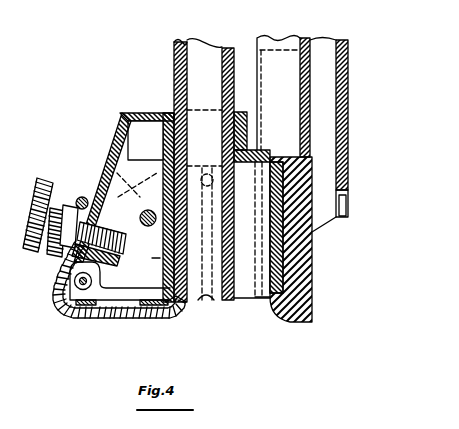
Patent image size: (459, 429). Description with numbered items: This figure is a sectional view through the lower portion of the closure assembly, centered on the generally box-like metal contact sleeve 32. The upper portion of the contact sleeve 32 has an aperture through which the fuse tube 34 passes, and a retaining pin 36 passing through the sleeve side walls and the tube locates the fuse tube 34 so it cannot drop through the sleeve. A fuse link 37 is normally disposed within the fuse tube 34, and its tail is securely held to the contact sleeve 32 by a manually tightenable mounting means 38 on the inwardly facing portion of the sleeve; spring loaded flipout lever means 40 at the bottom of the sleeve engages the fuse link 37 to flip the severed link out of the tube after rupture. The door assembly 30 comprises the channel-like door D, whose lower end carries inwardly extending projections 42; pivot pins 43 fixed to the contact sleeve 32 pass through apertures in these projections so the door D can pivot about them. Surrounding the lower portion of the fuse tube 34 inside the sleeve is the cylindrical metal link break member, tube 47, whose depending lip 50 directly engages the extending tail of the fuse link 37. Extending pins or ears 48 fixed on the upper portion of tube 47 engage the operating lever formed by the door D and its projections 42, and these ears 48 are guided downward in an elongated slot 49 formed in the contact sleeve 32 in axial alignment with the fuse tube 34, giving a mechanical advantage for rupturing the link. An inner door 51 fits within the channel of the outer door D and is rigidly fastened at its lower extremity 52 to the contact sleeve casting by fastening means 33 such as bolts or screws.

The door assembly 30 is at (354, 118).
The contact sleeve 32 is at (152, 148).
The fastening means 33 is at (285, 268).
The fuse tube 34 is at (174, 52).
The retaining pin 36 is at (175, 118).
The fuse link 37 is at (142, 316).
The manually tightenable mounting means 38 is at (32, 236).
The spring loaded flipout lever means 40 is at (94, 314).
The inwardly extending projections 42 is at (103, 166).
The pivot pins 43 is at (146, 228).
The cylindrical tube (link break member) 47 is at (238, 298).
The extending pins or ears 48 is at (205, 128).
The elongated slot 49 is at (212, 265).
The depending lip 50 is at (176, 306).
The inner door 51 is at (300, 90).
The lower extremity of inner door 52 is at (300, 296).
The door D is at (352, 50).